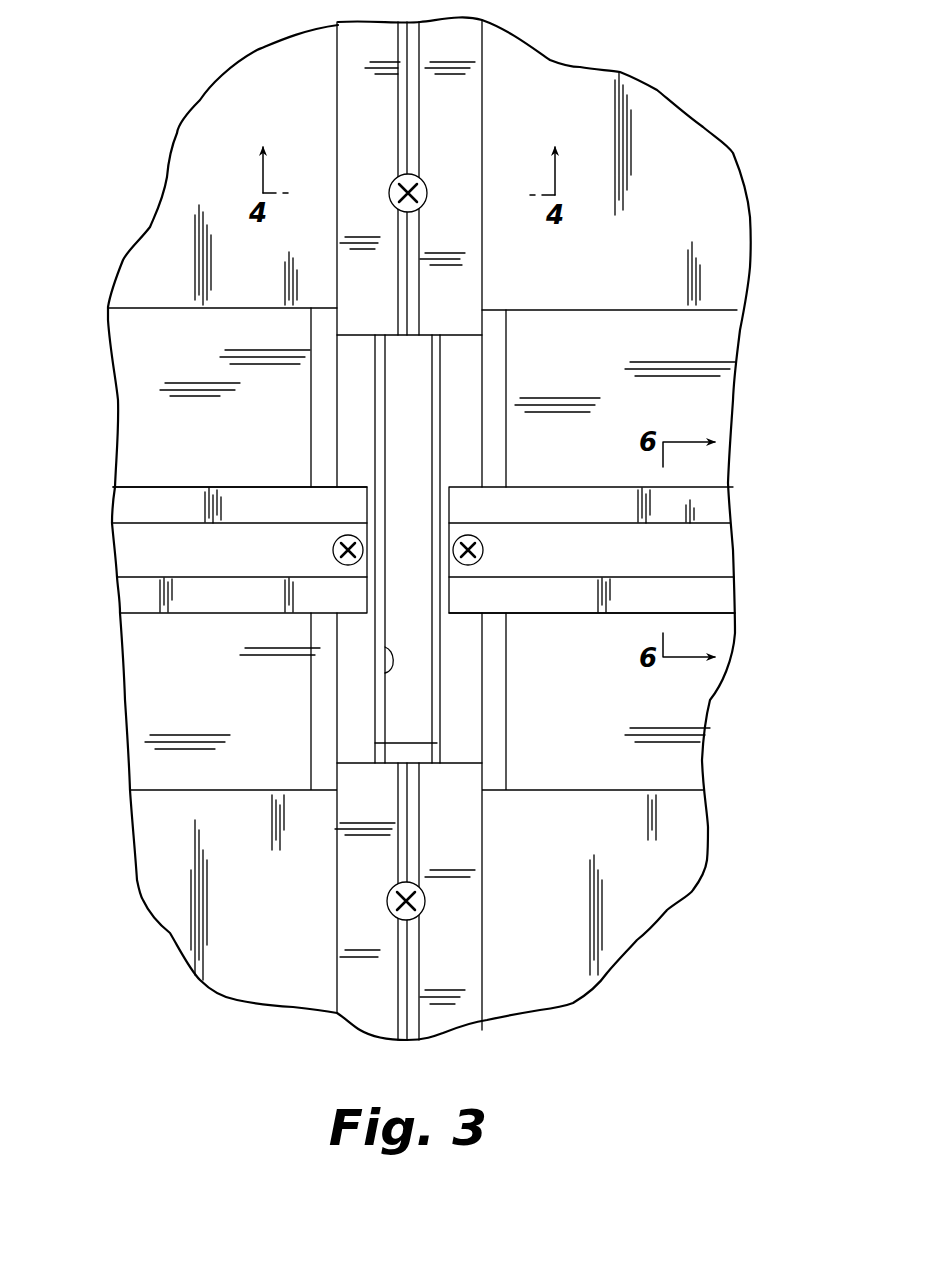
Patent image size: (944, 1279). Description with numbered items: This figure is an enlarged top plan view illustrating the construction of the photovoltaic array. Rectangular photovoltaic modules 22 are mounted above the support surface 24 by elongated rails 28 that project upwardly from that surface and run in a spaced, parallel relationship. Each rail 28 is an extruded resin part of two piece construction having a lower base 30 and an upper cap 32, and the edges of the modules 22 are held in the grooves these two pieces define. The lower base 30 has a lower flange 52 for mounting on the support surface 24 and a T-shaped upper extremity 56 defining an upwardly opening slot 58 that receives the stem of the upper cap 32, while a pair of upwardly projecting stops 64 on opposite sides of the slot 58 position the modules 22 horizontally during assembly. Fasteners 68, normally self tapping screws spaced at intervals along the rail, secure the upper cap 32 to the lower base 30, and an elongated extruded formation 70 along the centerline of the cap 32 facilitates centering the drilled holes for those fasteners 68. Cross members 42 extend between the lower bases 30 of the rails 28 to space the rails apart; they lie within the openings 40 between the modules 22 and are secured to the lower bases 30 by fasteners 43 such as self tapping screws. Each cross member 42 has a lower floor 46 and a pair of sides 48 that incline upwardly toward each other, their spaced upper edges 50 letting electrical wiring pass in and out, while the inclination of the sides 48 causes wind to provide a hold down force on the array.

The photovoltaic module 22 is at (240, 110).
The support surface 24 is at (193, 1005).
The elongated rail 28 is at (497, 349).
The lower base 30 is at (493, 722).
The upper cap 32 is at (495, 263).
The opening 40 is at (710, 345).
The cross member 42 is at (110, 498).
The fastener 43 is at (348, 535).
The lower floor 46 is at (123, 543).
The side 48 is at (173, 505).
The upper edge 50 is at (200, 510).
The lower flange 52 is at (322, 653).
The upper extremity 56 is at (480, 650).
The slot 58 is at (393, 655).
The stop 64 is at (437, 743).
The fastener 68 is at (424, 193).
The extruded formation 70 is at (398, 117).